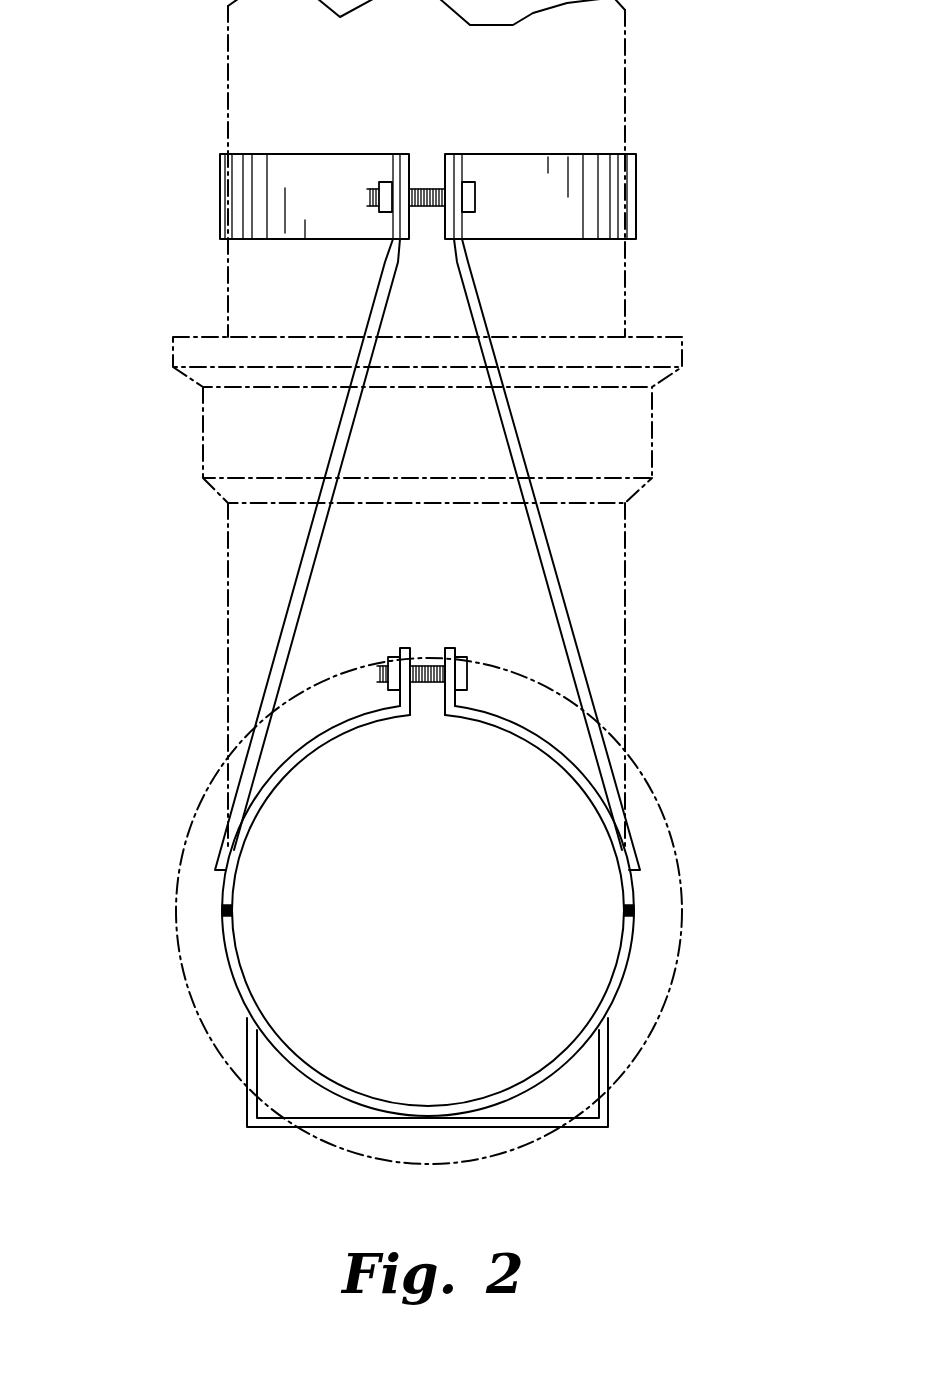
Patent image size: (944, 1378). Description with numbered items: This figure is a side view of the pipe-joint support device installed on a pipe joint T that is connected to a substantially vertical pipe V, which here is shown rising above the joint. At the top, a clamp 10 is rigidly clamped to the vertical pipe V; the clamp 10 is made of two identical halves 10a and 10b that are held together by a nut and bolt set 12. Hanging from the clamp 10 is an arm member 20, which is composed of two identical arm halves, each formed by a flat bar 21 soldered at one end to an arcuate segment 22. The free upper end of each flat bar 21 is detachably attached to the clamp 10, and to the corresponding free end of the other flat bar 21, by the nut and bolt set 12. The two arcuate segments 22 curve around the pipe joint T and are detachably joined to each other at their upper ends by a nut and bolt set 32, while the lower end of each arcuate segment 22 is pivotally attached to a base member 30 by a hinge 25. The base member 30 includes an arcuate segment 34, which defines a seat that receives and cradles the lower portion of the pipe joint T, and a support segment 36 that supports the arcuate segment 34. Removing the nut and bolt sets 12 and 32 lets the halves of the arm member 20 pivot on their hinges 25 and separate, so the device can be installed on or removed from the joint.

The vertical pipe V is at (627, 90).
The pipe joint T is at (652, 430).
The clamp 10 is at (408, 176).
The clamp half 10a is at (223, 153).
The clamp half 10b is at (636, 153).
The nut and bolt set 12 is at (378, 192).
The arm member 20 is at (388, 577).
The flat bar 21 is at (300, 570).
The arcuate segment 22 is at (555, 758).
The hinge 25 is at (232, 910).
The nut and bolt set 32 is at (378, 672).
The base member 30 is at (397, 1022).
The arcuate segment 34 is at (307, 1070).
The support segment 36 is at (610, 1108).